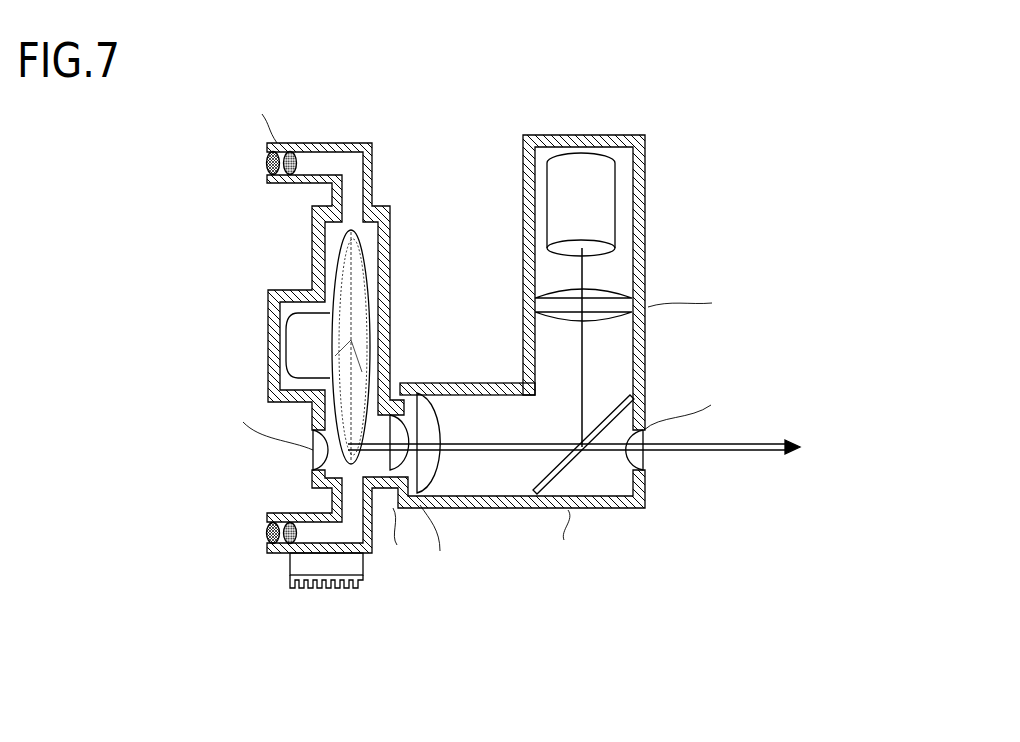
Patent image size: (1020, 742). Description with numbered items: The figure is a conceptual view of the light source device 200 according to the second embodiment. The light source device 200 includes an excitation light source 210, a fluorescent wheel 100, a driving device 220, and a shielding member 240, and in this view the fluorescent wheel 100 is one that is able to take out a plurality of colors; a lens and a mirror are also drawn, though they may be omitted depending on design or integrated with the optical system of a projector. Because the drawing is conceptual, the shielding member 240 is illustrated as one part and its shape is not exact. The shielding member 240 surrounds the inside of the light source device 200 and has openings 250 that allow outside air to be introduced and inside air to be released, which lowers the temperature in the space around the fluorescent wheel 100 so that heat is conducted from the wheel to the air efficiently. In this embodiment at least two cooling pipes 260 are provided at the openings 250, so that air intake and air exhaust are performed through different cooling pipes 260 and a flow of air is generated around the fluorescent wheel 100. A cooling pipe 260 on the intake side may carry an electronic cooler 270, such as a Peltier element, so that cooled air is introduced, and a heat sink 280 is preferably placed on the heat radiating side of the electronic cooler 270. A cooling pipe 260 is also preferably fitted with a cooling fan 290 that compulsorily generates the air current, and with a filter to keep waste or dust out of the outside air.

The fluorescent wheel 100 is at (334, 262).
The light source device 200 is at (495, 387).
The excitation light source 210 is at (648, 210).
The driving device 220 is at (268, 345).
The shielding member 240 is at (452, 380).
The opening 250 is at (353, 213).
The cooling pipe 260 is at (260, 144).
The electronic cooler 270 is at (290, 563).
The heat sink 280 is at (290, 580).
The cooling fan 290 is at (300, 143).